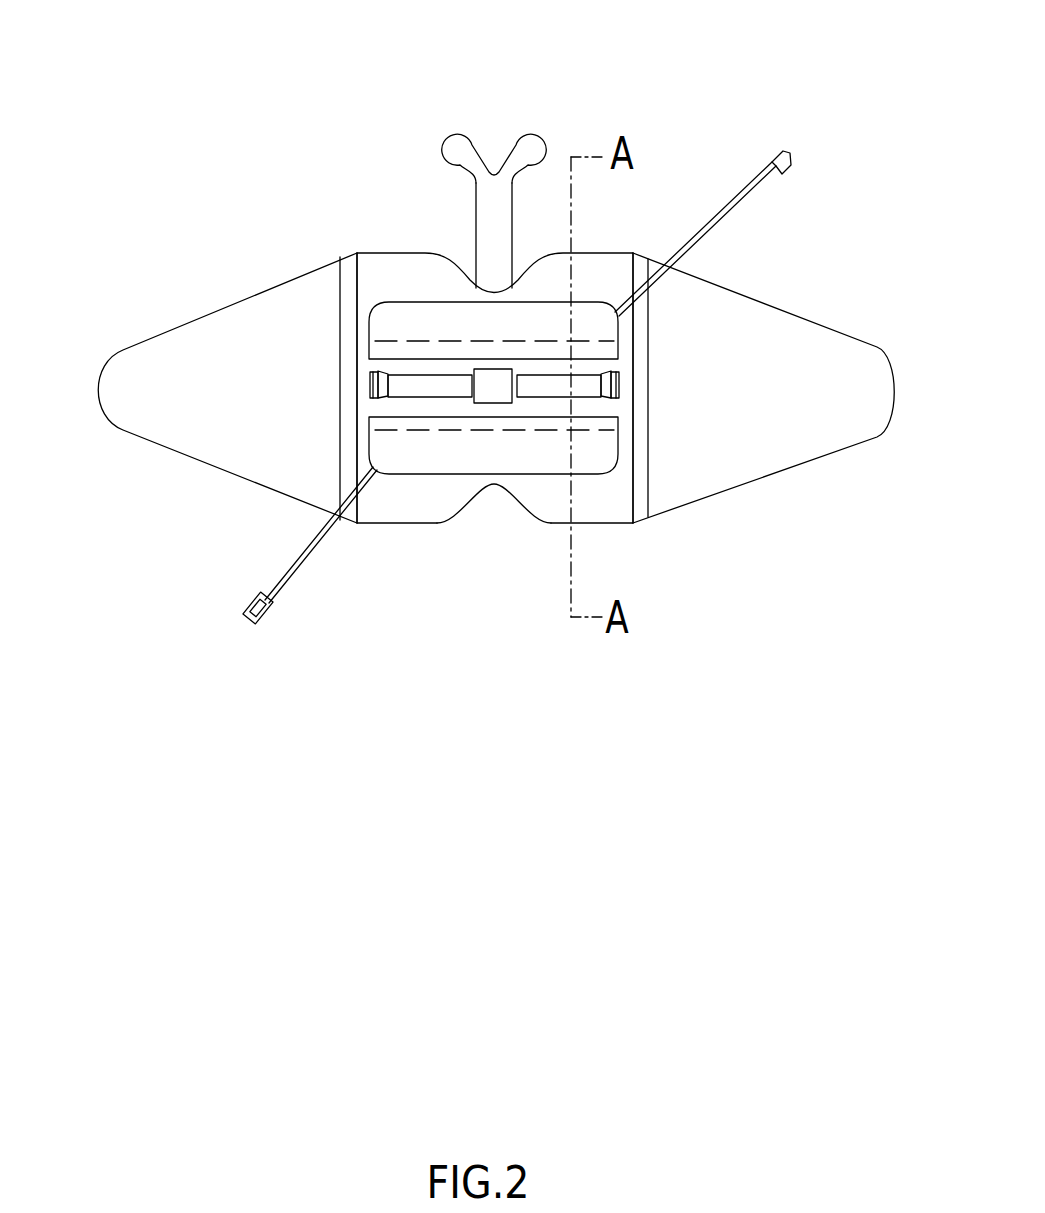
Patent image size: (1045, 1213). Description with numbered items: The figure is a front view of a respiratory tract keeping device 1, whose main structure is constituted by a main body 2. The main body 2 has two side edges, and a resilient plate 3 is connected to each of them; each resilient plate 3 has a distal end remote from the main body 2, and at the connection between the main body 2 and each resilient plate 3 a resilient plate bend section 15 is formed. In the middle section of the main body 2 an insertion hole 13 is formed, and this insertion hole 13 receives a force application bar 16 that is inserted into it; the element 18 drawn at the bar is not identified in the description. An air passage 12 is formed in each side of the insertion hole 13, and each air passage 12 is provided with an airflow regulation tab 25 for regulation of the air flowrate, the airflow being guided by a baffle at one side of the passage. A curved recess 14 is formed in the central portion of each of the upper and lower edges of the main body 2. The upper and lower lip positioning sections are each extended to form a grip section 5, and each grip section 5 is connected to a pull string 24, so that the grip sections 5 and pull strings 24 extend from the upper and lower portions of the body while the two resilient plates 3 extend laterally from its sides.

The respiratory tract keeping device 1 is at (156, 280).
The main body 2 is at (600, 275).
The resilient plate 3 is at (773, 333).
The grip section 5 is at (427, 321).
The air passage 12 is at (552, 385).
The insertion hole 13 is at (493, 383).
The curved recess 14 is at (493, 485).
The resilient plate bend section 15 is at (350, 305).
The force application bar 16 is at (487, 201).
The forked head / eyelet 18 is at (525, 150).
The pull string 24 is at (762, 180).
The airflow regulation tab 25 is at (382, 388).